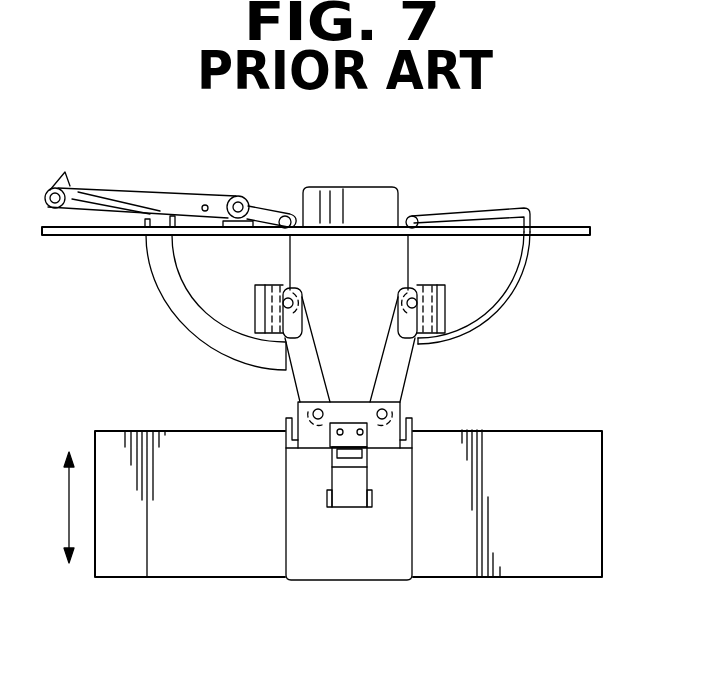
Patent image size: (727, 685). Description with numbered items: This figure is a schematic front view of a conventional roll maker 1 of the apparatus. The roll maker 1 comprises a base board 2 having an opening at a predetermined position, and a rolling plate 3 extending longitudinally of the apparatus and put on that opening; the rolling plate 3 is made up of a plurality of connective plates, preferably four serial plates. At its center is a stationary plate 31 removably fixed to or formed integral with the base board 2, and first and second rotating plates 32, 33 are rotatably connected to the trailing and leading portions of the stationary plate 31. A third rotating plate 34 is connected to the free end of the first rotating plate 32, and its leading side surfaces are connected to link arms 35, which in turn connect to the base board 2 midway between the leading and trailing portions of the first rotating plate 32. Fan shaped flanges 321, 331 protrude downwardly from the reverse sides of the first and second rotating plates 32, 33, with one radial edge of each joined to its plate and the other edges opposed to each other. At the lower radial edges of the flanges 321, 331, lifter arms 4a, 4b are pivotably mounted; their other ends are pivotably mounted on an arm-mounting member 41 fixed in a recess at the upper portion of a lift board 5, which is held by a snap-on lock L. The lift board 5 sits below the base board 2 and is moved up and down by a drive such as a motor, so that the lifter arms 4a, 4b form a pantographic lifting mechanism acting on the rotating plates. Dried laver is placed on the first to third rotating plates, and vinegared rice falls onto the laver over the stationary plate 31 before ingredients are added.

The roll maker 1 is at (537, 192).
The base board 2 is at (563, 227).
The rolling plate 3 is at (412, 178).
The stationary plate 31 is at (345, 187).
The first rotating plate 32 is at (278, 215).
The second rotating plate 33 is at (472, 218).
The third rotating plate 34 is at (129, 186).
The link arms 35 is at (168, 194).
The fan shaped flange 321 is at (217, 280).
The fan shaped flange 331 is at (480, 275).
The lifter arm 4a is at (295, 377).
The lifter arm 4b is at (410, 372).
The holder 41 is at (318, 450).
The snap-on lock L is at (358, 505).
The lift board 5 is at (507, 547).